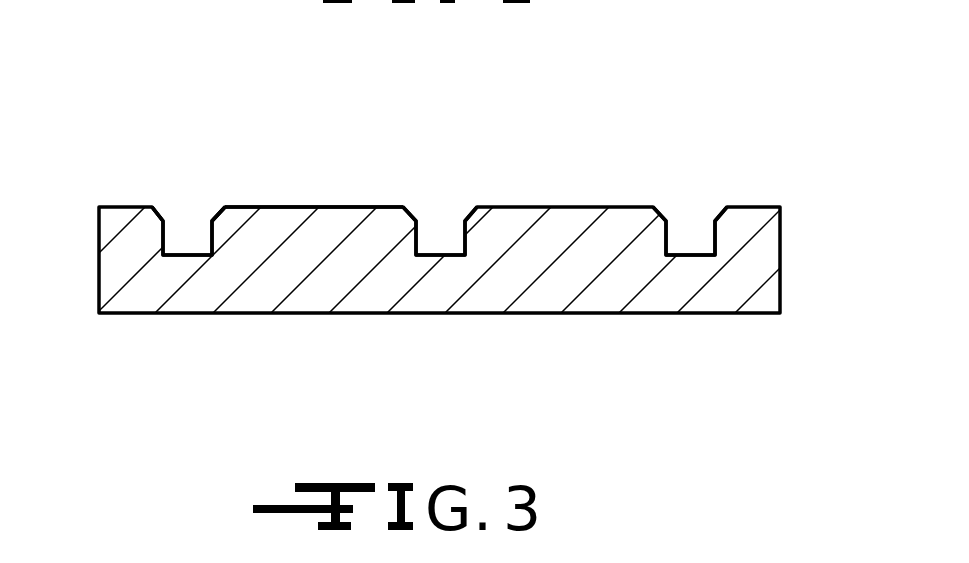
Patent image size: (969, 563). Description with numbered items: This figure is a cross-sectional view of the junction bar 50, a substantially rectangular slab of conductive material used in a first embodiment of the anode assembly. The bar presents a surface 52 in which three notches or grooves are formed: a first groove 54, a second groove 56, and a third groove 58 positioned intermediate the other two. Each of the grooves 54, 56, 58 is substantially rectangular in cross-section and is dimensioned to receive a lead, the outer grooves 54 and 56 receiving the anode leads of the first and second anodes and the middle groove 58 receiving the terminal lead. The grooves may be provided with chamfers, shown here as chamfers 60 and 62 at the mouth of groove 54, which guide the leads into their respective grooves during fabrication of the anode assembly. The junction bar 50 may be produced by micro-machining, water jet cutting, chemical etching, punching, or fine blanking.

The junction bar 50 is at (774, 152).
The surface 52 is at (312, 207).
The groove 54 is at (185, 253).
The groove 56 is at (692, 252).
The groove 58 is at (429, 252).
The chamfer 60 is at (163, 207).
The chamfer 62 is at (217, 210).